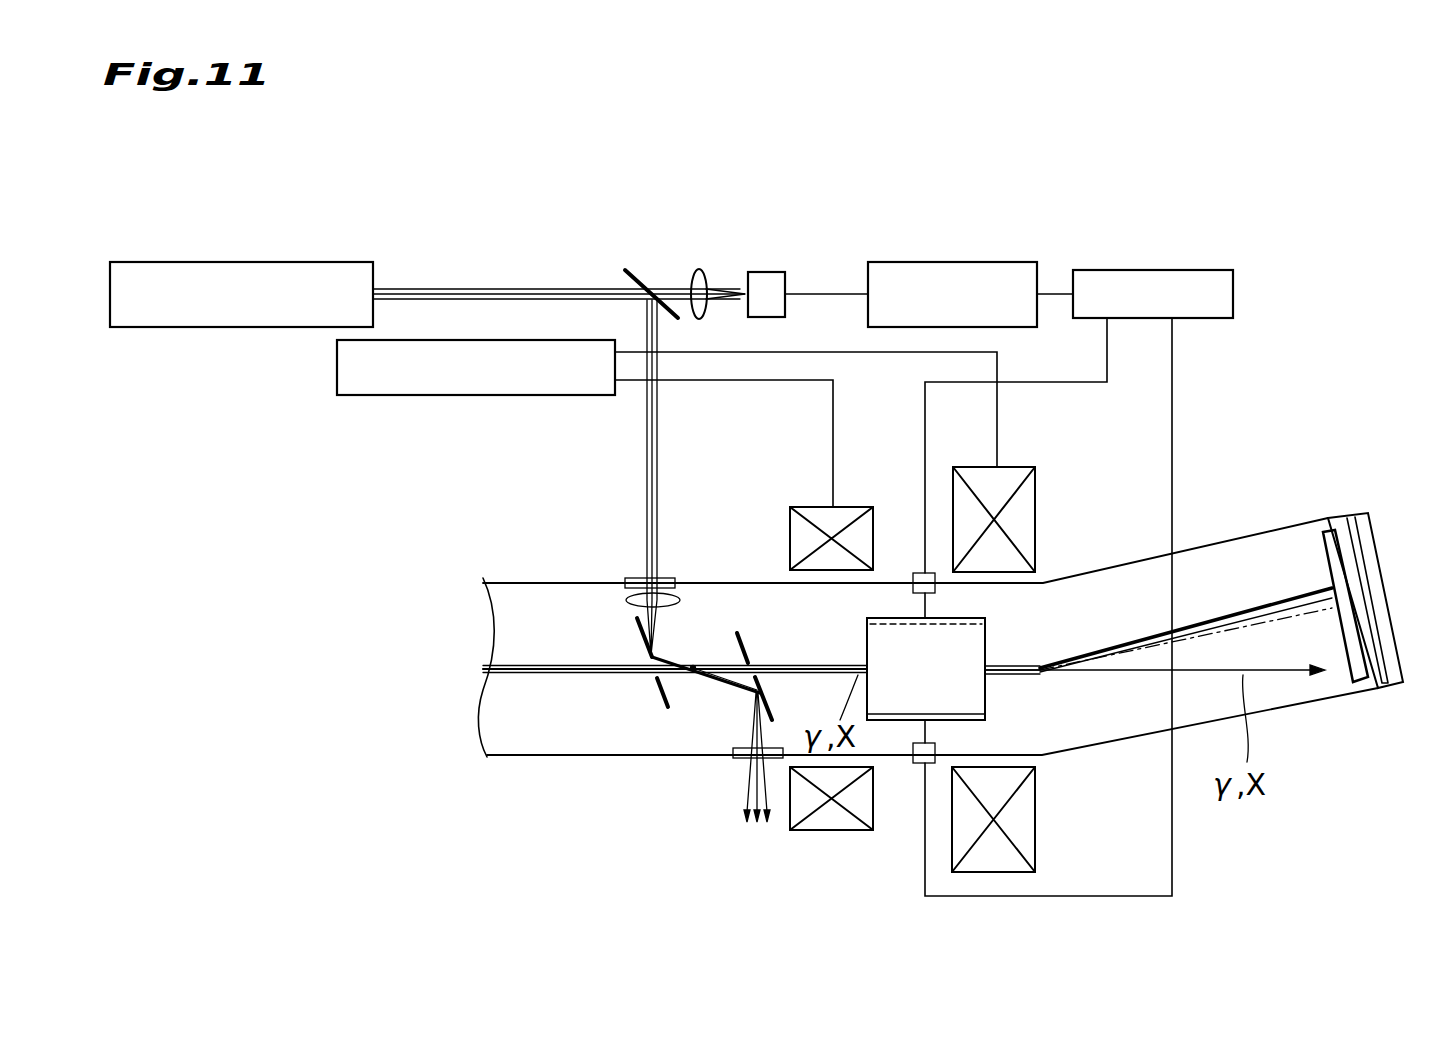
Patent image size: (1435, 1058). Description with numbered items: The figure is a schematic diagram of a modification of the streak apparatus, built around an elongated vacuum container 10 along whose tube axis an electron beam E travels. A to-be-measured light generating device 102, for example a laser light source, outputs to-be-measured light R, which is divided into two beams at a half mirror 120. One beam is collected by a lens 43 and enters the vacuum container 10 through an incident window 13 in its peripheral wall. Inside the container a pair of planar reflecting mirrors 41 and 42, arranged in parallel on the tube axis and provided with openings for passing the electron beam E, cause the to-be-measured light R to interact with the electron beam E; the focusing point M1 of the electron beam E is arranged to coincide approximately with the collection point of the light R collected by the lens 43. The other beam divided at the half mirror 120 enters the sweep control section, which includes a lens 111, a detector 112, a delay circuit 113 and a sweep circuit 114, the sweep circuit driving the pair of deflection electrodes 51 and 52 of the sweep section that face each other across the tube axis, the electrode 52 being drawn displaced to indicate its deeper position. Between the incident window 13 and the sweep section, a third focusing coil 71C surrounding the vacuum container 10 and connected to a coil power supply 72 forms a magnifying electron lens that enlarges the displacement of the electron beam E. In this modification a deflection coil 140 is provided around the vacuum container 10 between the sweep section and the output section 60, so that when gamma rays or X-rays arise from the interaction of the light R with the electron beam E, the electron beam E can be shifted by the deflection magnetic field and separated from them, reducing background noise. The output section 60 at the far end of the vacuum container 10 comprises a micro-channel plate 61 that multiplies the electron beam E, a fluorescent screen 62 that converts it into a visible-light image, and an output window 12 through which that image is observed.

The to-be-measured light generating device 102 is at (270, 275).
The coil power supply 72 is at (485, 395).
The half mirror 120 is at (642, 270).
The lens 111 is at (710, 268).
The detector 112 is at (773, 270).
The delay circuit 113 is at (922, 262).
The sweep circuit 114 is at (1172, 270).
The deflection coil 140 is at (1022, 467).
The third focusing coil 71C is at (852, 505).
The deflection electrode 52 is at (888, 618).
The deflection electrode 51 is at (895, 722).
The lens 43 is at (622, 598).
The incident window 13 is at (667, 578).
The reflecting mirror 41 is at (643, 653).
The reflecting mirror 42 is at (748, 652).
The vacuum container 10 is at (535, 757).
The output section 60 is at (1433, 456).
The micro-channel plate 61 is at (1327, 523).
The fluorescent screen 62 is at (1350, 522).
The output window 12 is at (1365, 537).
The to-be-measured light R is at (522, 290).
The electron beam E is at (542, 675).
The focusing point M1 is at (692, 671).